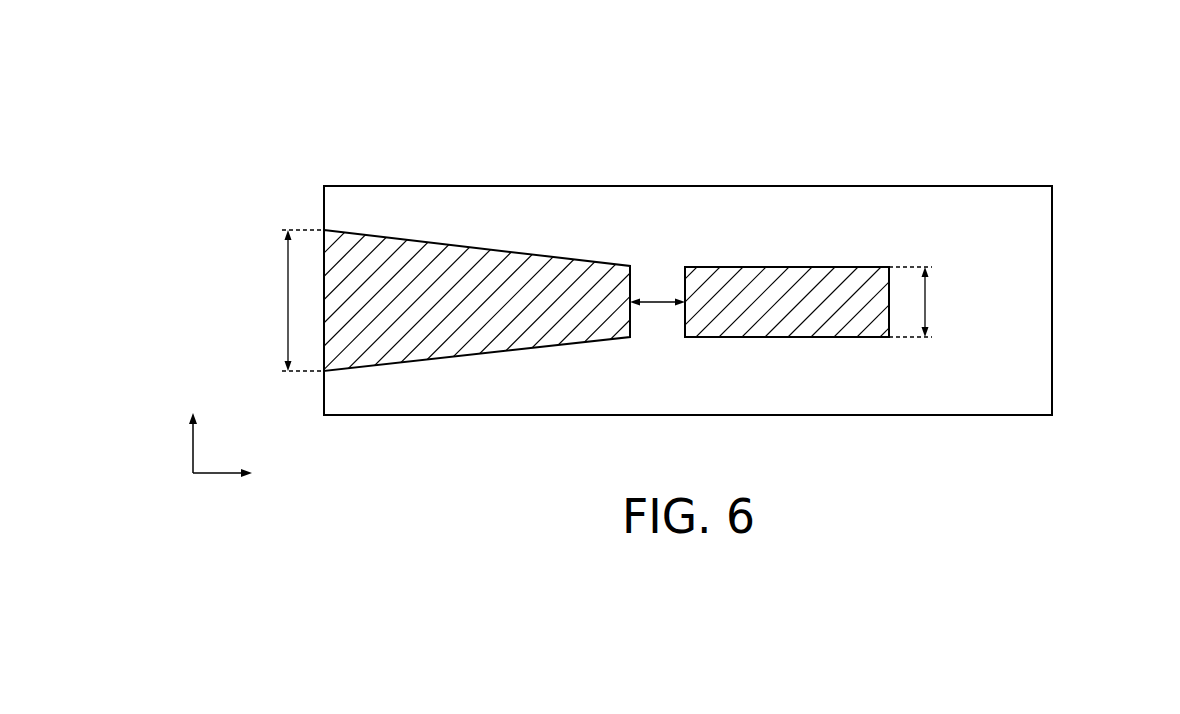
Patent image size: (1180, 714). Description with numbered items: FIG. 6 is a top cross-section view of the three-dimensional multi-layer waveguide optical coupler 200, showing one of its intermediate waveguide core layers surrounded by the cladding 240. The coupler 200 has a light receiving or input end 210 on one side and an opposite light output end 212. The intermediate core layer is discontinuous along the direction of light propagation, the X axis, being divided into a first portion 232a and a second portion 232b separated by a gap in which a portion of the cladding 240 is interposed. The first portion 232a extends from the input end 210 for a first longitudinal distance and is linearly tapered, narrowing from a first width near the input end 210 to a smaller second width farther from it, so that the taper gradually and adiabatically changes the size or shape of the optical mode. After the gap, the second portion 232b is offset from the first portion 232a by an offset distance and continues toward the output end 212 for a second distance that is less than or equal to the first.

The optical coupler 200 is at (227, 85).
The light receiving or input end 210 is at (314, 209).
The light output end 212 is at (1063, 302).
The first portion of intermediate waveguide core layer 232a is at (470, 262).
The second portion of intermediate waveguide core layer 232b is at (790, 287).
The cladding 240 is at (979, 199).